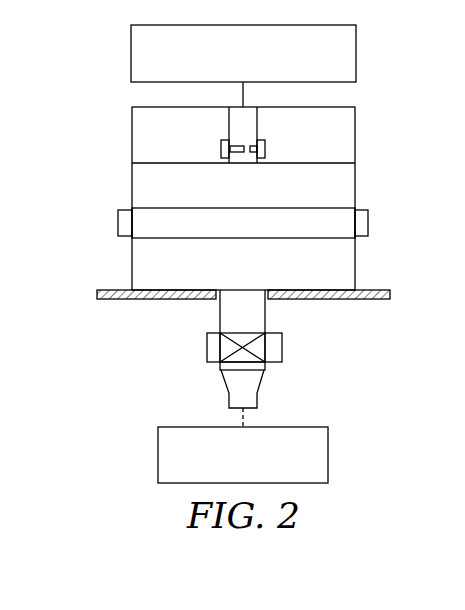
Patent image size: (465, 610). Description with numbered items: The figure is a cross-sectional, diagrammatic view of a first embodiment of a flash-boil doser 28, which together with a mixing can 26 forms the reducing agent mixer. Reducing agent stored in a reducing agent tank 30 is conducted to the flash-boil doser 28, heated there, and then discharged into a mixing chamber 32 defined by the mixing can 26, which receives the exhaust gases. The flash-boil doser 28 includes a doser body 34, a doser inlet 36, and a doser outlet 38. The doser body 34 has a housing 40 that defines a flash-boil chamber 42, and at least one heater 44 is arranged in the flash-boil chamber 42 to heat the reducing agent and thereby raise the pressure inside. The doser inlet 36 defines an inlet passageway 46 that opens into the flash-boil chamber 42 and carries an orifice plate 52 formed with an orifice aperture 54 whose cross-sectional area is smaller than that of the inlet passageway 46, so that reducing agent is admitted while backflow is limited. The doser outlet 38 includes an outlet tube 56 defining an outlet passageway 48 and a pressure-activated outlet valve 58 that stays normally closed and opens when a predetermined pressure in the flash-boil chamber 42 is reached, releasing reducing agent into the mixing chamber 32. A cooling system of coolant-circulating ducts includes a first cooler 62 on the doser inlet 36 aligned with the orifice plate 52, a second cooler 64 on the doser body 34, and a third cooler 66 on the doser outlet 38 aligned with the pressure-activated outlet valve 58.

The mixing can 26 is at (375, 290).
The flash-boil doser 28 is at (185, 183).
The reducing agent tank 30 is at (356, 55).
The mixing chamber 32 is at (158, 453).
The doser body 34 is at (129, 139).
The doser inlet 36 is at (269, 129).
The doser outlet 38 is at (247, 358).
The housing 40 is at (132, 155).
The flash-boil chamber 42 is at (176, 188).
The heater 44 is at (300, 207).
The inlet passageway 46 is at (245, 110).
The outlet passageway 48 is at (249, 322).
The orifice plate 52 is at (241, 134).
The orifice aperture 54 is at (241, 135).
The outlet tube 56 is at (268, 323).
The pressure-activated outlet valve 58 is at (282, 348).
The first cooler 62 is at (218, 146).
The second cooler 64 is at (116, 226).
The third cooler 66 is at (205, 344).